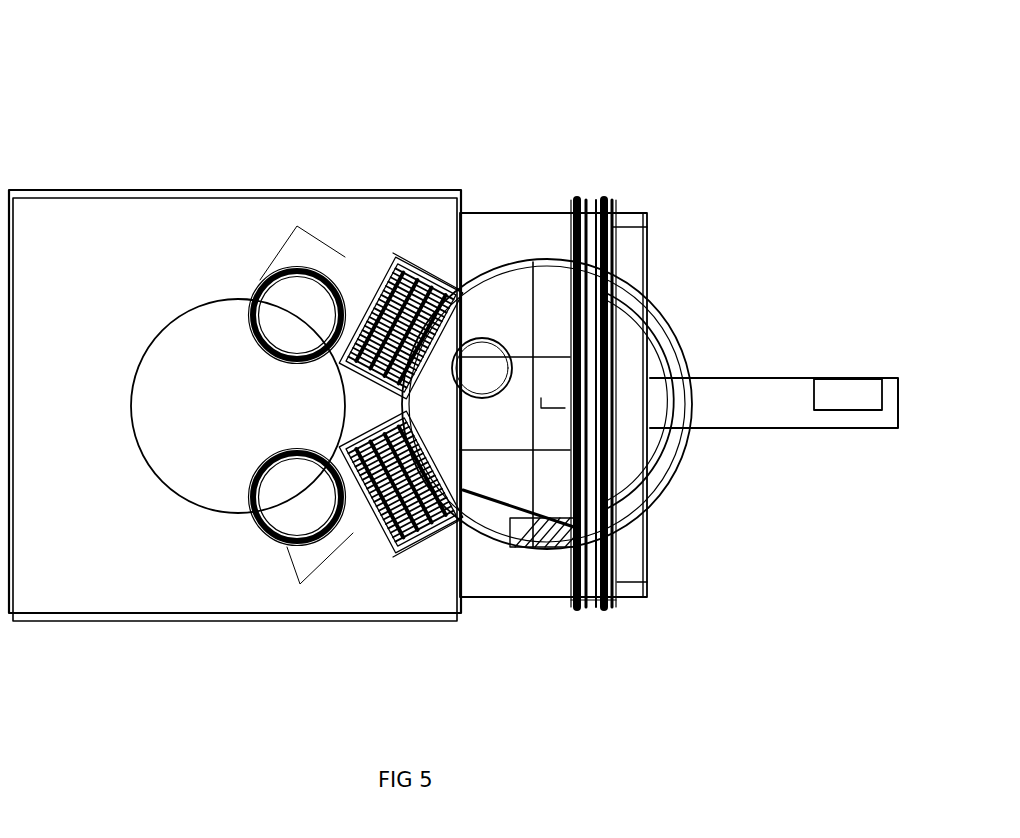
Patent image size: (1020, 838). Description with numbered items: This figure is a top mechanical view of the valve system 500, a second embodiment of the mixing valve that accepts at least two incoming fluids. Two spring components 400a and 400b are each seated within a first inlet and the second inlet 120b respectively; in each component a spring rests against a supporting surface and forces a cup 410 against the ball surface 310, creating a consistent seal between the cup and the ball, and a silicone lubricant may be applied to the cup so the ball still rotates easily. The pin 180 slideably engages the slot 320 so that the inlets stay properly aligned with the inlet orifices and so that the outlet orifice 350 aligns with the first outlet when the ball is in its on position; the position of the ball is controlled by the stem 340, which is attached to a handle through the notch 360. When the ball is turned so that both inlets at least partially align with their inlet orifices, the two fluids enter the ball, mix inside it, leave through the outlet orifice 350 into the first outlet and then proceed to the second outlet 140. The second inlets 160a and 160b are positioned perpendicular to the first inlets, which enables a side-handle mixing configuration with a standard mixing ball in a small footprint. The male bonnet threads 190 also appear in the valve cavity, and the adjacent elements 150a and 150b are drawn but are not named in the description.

The valve system 500 is at (133, 70).
The second outlet 140 is at (182, 373).
The second inlet 160a is at (306, 294).
The second inlet 160b is at (278, 515).
The first heat sink module 150a is at (352, 266).
The second heat sink module 150b is at (352, 533).
The spring component 400a is at (423, 292).
The spring component 400b is at (458, 530).
The second inlet 120b is at (428, 558).
The outlet orifice 350 is at (482, 337).
The slot 320 is at (613, 468).
The ball surface 310 is at (660, 350).
The male bonnet threads 190 is at (597, 196).
The stem 340 is at (723, 377).
The notch 360 is at (853, 390).
The pin 180 is at (567, 517).
The cup 410 is at (607, 550).